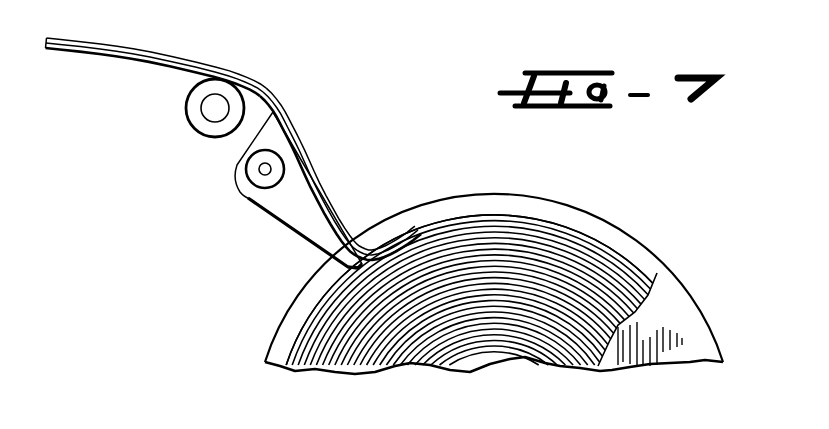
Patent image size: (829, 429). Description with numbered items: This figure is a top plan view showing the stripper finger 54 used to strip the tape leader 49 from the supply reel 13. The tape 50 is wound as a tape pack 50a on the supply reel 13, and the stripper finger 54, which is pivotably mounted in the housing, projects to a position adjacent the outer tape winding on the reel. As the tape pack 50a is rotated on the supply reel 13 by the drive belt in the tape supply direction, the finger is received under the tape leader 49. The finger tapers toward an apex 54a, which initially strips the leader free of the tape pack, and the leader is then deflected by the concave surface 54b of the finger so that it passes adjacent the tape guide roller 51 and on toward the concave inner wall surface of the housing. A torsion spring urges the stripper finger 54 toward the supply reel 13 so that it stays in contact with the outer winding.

The supply reel 13 is at (683, 295).
The tape leader 49 is at (155, 65).
The tape 50 is at (605, 260).
The tape pack 50a is at (495, 225).
The tape guide roller 51 is at (219, 88).
The stripper finger 54 is at (280, 200).
The apex 54a is at (358, 284).
The concave surface 54b is at (312, 192).